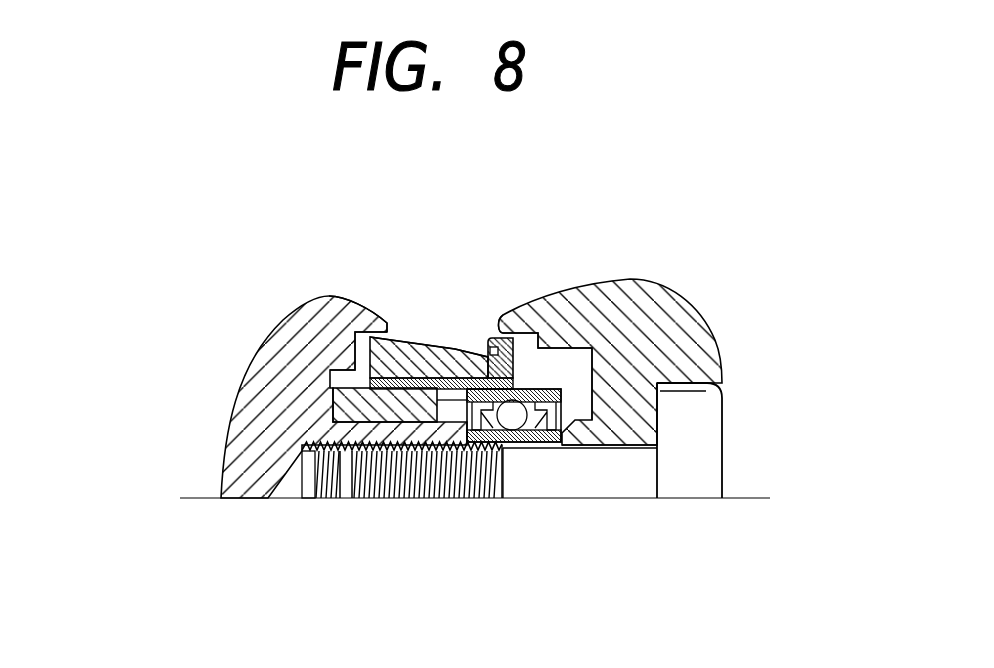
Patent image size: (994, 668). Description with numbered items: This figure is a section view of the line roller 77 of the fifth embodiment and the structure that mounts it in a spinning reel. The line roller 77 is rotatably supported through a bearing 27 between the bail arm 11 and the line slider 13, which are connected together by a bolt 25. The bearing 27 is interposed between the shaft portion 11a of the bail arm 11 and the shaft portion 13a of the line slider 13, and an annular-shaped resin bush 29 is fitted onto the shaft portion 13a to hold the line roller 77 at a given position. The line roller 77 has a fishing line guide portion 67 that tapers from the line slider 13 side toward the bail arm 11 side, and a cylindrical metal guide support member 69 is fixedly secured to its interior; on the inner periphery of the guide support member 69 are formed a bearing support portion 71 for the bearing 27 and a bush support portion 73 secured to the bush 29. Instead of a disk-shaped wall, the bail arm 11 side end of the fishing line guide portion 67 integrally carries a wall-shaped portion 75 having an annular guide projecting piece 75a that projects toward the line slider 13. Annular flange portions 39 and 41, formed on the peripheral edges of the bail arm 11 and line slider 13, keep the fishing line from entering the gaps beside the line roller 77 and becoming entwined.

The bail arm 11 is at (724, 365).
The shaft portion 11a is at (574, 440).
The line slider 13 is at (222, 452).
The shaft portion 13a is at (373, 498).
The bolt 25 is at (723, 447).
The bearing 27 is at (525, 442).
The resin bush 29 is at (330, 405).
The flange portion 39 is at (503, 317).
The flange portion 41 is at (381, 314).
The fishing line guide portion 67 is at (404, 339).
The guide support member 69 is at (515, 388).
The bearing support portion 71 is at (497, 446).
The bush support portion 73 is at (356, 362).
The wall-shaped portion 75 is at (508, 321).
The guide projecting piece 75a is at (486, 337).
The line roller 77 is at (434, 345).